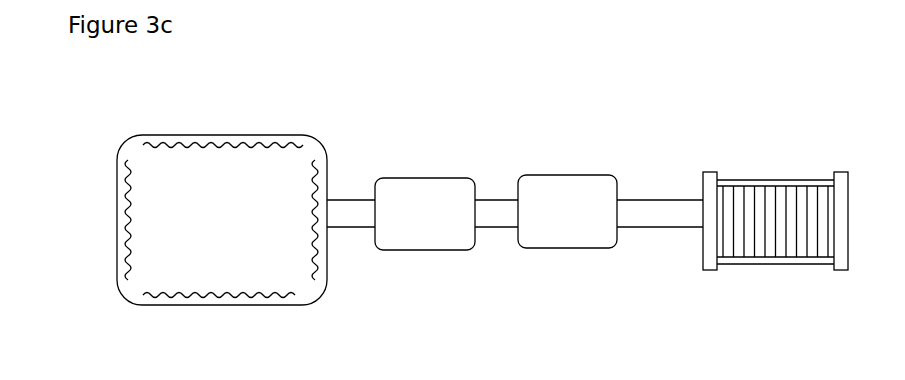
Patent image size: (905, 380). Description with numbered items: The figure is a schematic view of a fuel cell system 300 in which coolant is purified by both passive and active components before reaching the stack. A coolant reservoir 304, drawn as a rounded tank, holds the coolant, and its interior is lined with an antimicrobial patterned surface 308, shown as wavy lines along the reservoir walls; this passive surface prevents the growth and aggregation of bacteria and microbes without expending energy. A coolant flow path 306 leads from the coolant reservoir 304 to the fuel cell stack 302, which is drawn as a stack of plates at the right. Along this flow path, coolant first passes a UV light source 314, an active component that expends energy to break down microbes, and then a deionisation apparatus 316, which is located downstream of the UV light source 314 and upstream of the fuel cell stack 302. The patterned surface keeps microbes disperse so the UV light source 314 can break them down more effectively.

The fuel cell system 300 is at (160, 117).
The fuel cell stack 302 is at (777, 262).
The coolant reservoir 304 is at (278, 306).
The coolant flow path 306 is at (672, 210).
The antimicrobial patterned surface 308 is at (125, 200).
The UV light source 314 is at (427, 252).
The deionisation apparatus 316 is at (567, 250).